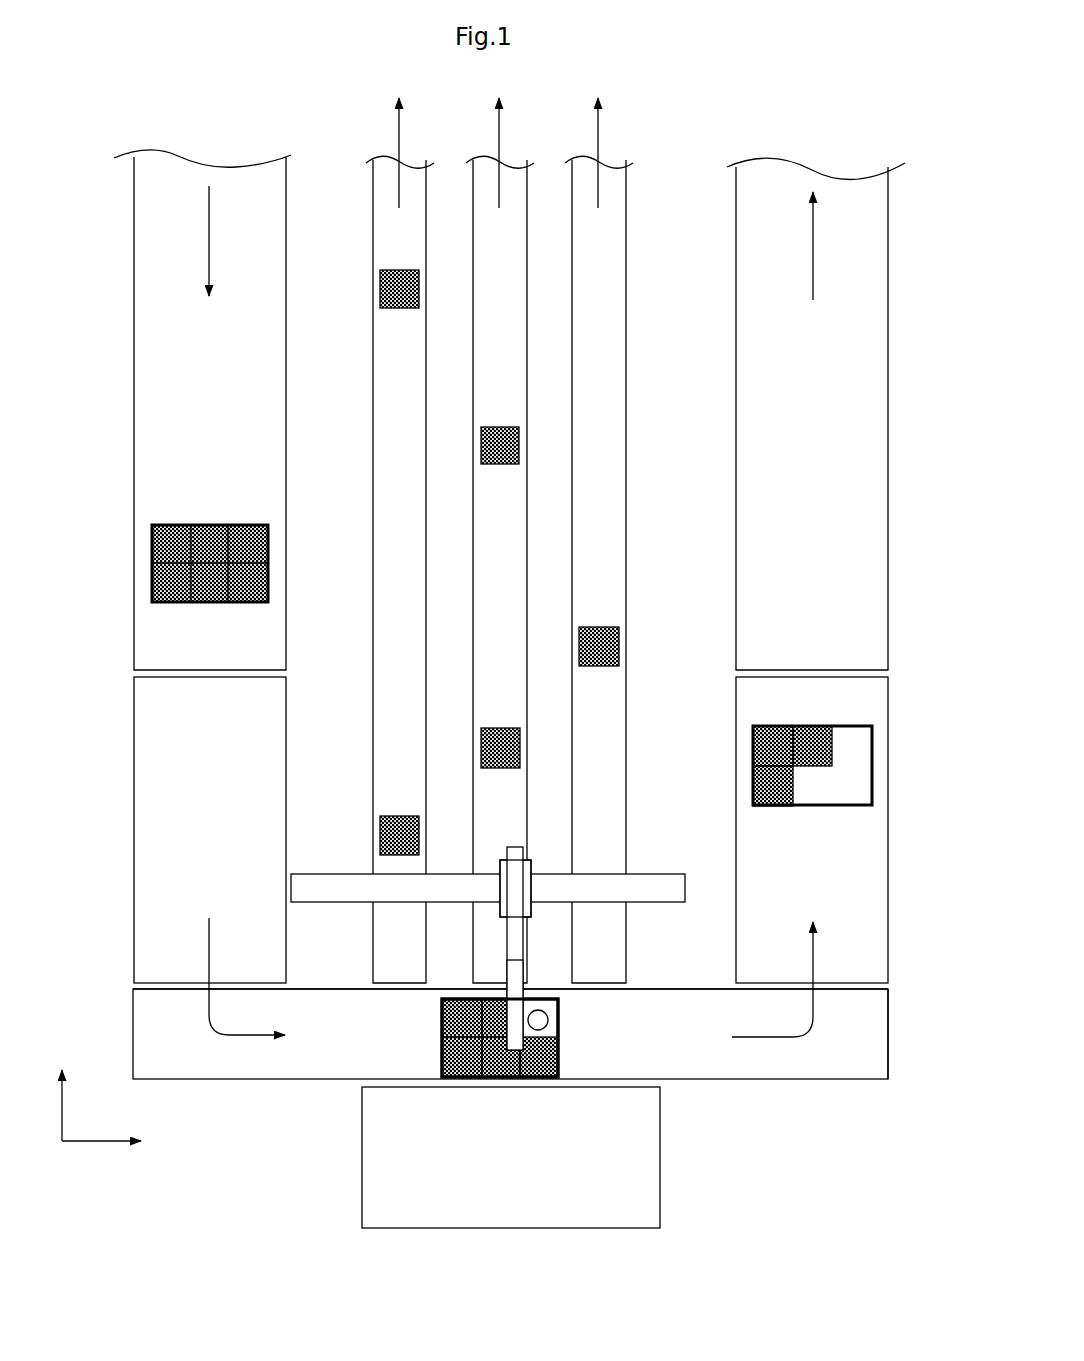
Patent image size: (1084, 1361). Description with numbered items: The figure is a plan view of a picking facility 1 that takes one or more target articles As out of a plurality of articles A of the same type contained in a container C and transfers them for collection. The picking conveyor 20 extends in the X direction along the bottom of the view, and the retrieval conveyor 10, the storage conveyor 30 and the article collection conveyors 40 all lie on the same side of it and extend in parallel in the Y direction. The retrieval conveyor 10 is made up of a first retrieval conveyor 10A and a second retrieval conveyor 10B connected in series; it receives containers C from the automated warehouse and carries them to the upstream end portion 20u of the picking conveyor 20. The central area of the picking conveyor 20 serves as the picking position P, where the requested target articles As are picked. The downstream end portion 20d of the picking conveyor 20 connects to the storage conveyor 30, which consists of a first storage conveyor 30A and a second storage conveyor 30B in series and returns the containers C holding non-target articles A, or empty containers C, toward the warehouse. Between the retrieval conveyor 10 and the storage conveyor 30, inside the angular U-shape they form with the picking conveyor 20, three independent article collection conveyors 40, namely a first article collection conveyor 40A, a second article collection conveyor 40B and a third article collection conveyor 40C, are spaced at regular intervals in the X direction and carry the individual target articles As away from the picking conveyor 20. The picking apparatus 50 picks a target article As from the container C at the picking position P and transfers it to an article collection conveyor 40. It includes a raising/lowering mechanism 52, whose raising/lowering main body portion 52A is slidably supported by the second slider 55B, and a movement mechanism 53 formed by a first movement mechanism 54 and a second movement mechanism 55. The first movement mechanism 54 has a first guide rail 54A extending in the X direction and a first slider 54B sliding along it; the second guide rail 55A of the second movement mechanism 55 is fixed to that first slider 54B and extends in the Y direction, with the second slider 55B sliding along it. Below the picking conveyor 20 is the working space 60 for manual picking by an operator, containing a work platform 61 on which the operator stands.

The picking facility 1 is at (82, 112).
The retrieval conveyor 10 is at (100, 372).
The first retrieval conveyor 10A is at (140, 641).
The second retrieval conveyor 10B is at (143, 753).
The picking conveyor 20 is at (313, 1063).
The upstream end portion 20u is at (143, 1015).
The downstream end portion 20d is at (882, 1030).
The storage conveyor 30 is at (893, 312).
The first storage conveyor 30A is at (876, 710).
The second storage conveyor 30B is at (881, 520).
The article collection conveyors 40 is at (505, 540).
The first article collection conveyor 40A is at (388, 634).
The second article collection conveyor 40B is at (480, 548).
The third article collection conveyor 40C is at (612, 718).
The picking apparatus 50 is at (493, 918).
The raising/lowering mechanism 52 is at (560, 1018).
The raising/lowering main body portion 52A is at (538, 1020).
The movement mechanism 53 is at (512, 916).
The first movement mechanism 54 is at (678, 848).
The first guide rail 54A is at (646, 882).
The first slider 54B is at (525, 862).
The second movement mechanism 55 is at (678, 982).
The second guide rail 55A is at (518, 938).
The second slider 55B is at (527, 1000).
The working space 60 is at (676, 1210).
The work platform 61 is at (553, 1222).
The articles A is at (246, 535).
The target articles As is at (411, 292).
The container C is at (170, 524).
The picking position P is at (483, 1085).